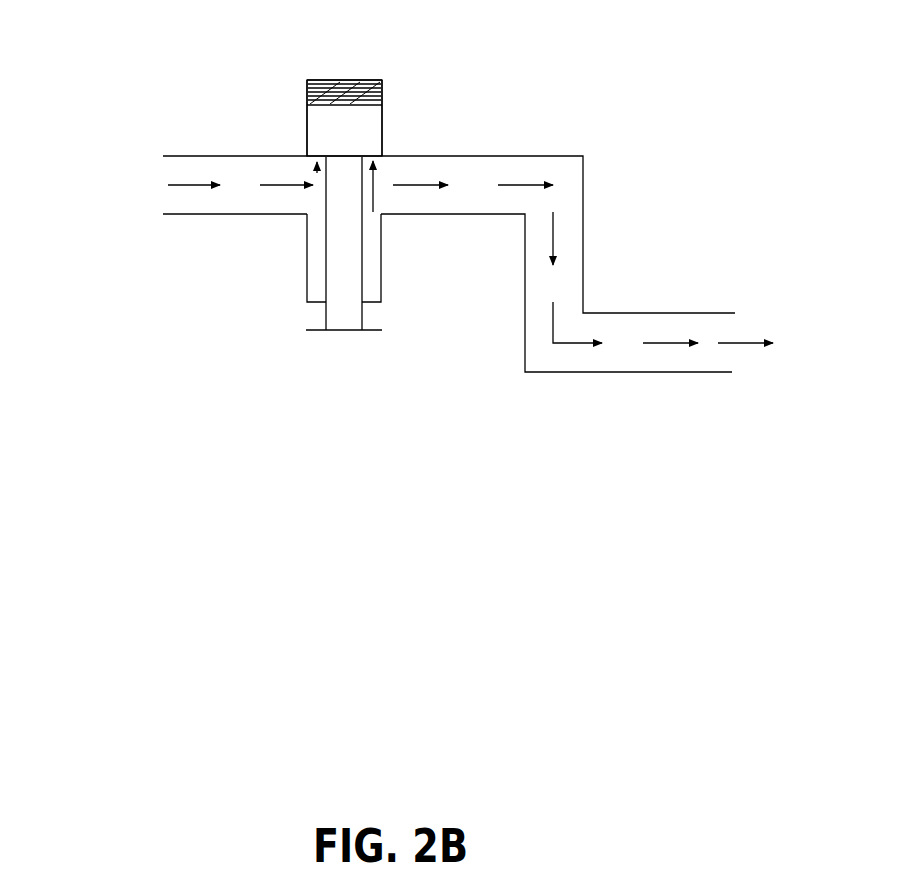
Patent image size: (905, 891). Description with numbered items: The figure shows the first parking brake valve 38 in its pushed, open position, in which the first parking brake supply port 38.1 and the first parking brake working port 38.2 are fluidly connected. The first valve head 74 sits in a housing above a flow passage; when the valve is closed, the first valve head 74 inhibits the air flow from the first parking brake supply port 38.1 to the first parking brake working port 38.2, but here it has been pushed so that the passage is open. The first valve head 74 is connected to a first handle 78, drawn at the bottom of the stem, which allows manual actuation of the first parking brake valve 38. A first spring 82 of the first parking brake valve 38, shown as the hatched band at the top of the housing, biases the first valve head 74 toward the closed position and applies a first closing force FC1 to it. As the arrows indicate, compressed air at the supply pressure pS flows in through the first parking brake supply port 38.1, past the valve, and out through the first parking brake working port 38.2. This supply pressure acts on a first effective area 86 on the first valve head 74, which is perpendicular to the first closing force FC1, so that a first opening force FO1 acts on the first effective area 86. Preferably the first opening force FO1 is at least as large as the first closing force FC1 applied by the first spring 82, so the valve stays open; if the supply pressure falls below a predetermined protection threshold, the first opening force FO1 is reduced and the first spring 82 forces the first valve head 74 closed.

The first parking brake valve 38 is at (370, 80).
The first parking brake supply port 38.1 is at (177, 155).
The first parking brake working port 38.2 is at (720, 314).
The first valve head 74 is at (313, 127).
The first spring 82 is at (327, 80).
The first handle 78 is at (325, 312).
The first effective area 86 is at (317, 175).
The first closing force FC1 is at (307, 88).
The first opening force FO1 is at (373, 193).